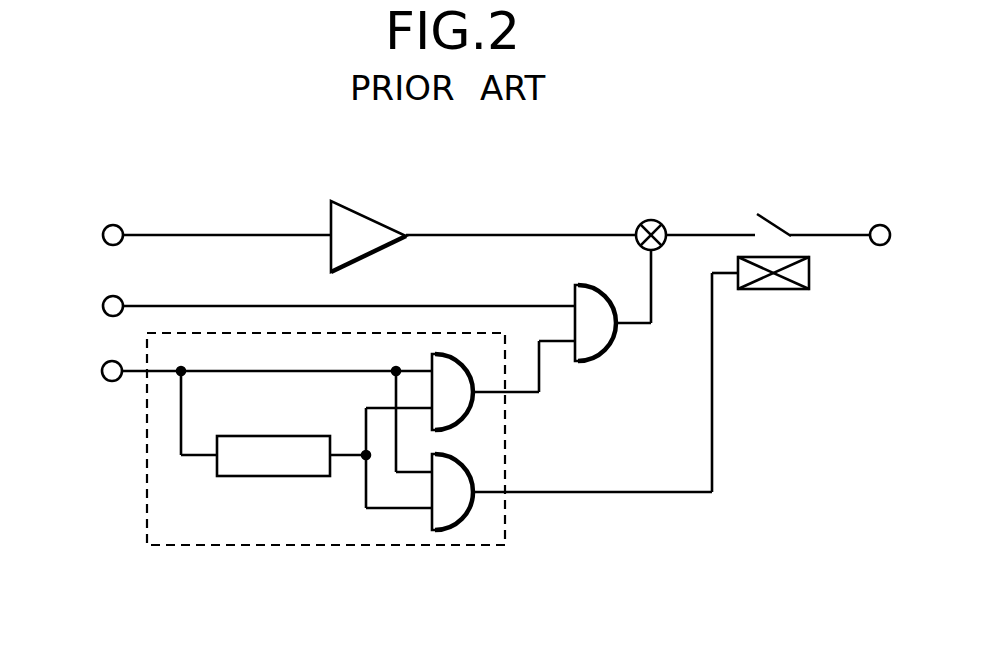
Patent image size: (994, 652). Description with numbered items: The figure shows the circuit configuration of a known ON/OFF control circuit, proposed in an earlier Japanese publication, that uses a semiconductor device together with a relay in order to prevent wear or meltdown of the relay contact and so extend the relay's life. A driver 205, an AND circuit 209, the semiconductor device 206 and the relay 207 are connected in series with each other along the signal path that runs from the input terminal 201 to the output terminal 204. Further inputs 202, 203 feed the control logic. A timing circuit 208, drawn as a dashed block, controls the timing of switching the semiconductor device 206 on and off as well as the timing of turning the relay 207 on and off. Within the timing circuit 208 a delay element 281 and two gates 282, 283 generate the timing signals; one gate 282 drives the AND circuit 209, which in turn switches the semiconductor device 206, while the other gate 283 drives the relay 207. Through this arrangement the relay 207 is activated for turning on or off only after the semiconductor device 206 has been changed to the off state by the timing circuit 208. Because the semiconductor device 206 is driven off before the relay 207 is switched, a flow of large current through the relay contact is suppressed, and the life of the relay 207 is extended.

The first input terminal 201 is at (106, 228).
The second input terminal 202 is at (106, 297).
The third input terminal 203 is at (106, 362).
The output terminal 204 is at (880, 224).
The driver 205 is at (364, 212).
The semiconductor device 206 is at (650, 219).
The relay 207 is at (772, 214).
The timing circuit 208 is at (336, 547).
The AND circuit 209 is at (606, 357).
The delay circuit 281 is at (241, 477).
The AND gate 282 is at (469, 410).
The AND gate 283 is at (468, 512).